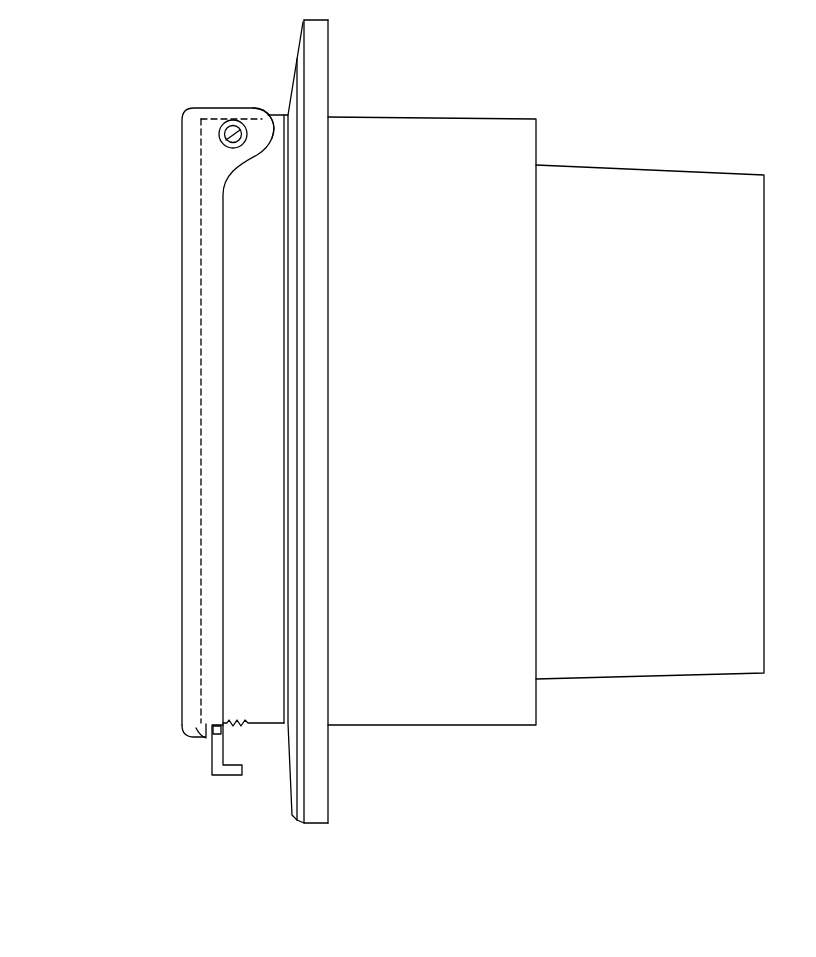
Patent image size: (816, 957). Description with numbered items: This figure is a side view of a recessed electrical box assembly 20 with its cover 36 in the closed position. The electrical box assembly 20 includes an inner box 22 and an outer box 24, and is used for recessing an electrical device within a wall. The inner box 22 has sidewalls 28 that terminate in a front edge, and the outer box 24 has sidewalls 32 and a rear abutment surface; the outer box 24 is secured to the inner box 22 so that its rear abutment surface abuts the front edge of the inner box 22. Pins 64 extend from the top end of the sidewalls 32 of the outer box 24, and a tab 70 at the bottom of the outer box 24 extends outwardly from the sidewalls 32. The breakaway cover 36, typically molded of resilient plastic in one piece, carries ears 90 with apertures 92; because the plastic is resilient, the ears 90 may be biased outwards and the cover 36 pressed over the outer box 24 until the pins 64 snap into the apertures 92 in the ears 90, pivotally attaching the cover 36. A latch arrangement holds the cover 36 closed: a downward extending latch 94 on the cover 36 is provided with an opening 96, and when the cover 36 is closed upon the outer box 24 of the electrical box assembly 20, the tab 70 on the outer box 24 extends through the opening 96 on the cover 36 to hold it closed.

The electrical box assembly 20 is at (612, 135).
The inner box 22 is at (645, 677).
The outer box 24 is at (433, 727).
The sidewalls 28 is at (665, 408).
The sidewalls 32 is at (428, 395).
The cover 36 is at (182, 422).
The pins 64 is at (221, 142).
The tab 70 is at (204, 742).
The ears 90 is at (243, 107).
The apertures 92 is at (245, 139).
The downward extending latch 94 is at (220, 777).
The opening 96 is at (197, 733).